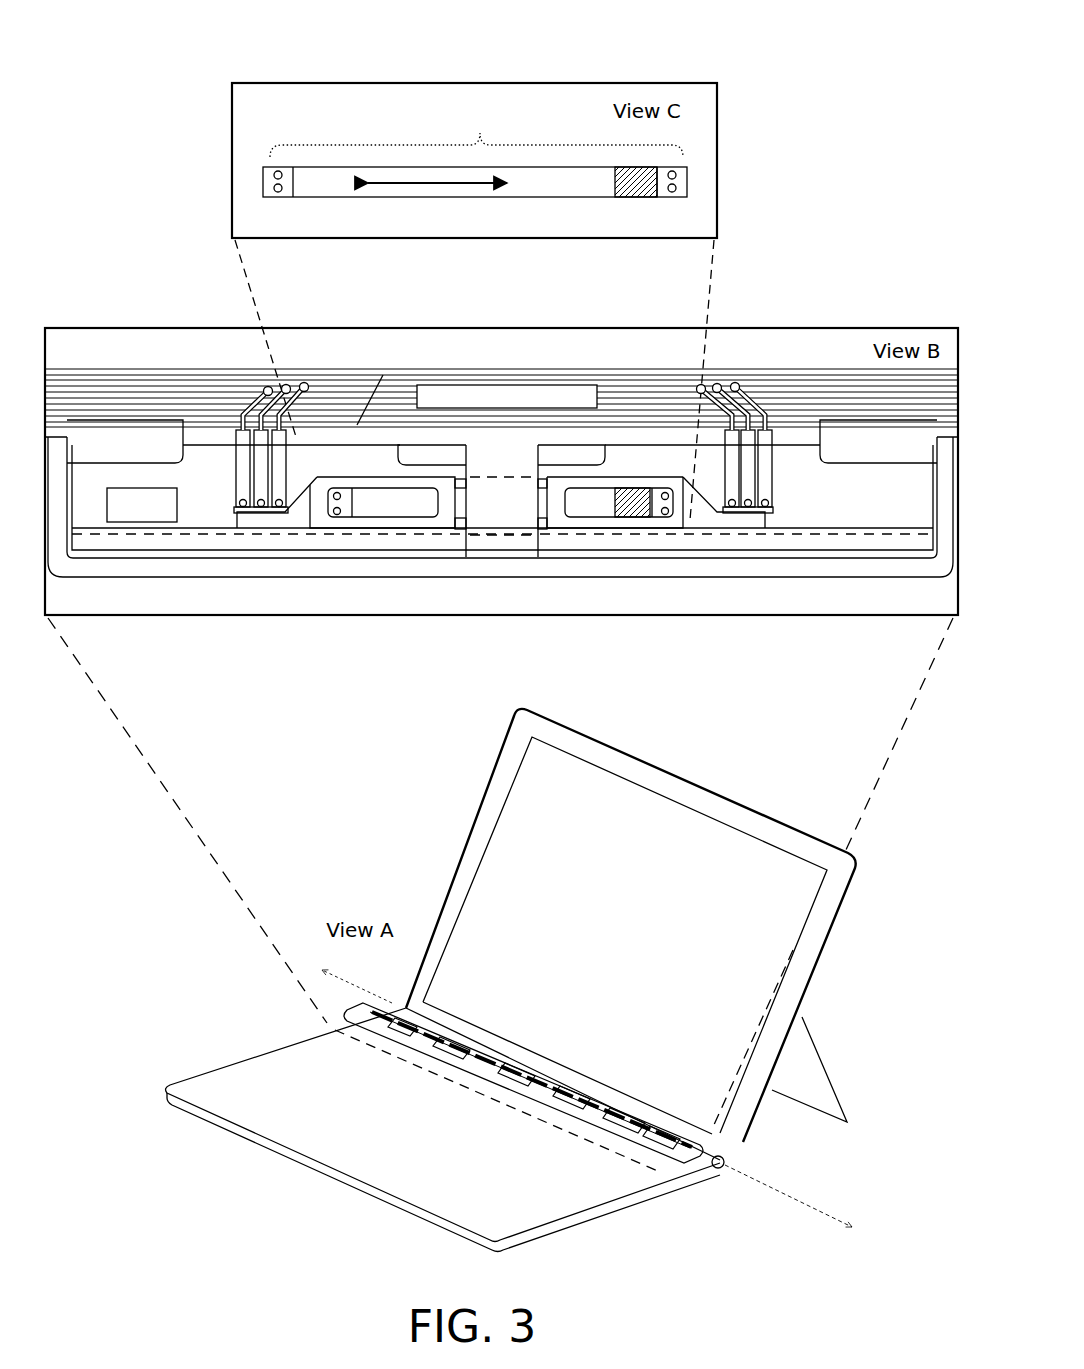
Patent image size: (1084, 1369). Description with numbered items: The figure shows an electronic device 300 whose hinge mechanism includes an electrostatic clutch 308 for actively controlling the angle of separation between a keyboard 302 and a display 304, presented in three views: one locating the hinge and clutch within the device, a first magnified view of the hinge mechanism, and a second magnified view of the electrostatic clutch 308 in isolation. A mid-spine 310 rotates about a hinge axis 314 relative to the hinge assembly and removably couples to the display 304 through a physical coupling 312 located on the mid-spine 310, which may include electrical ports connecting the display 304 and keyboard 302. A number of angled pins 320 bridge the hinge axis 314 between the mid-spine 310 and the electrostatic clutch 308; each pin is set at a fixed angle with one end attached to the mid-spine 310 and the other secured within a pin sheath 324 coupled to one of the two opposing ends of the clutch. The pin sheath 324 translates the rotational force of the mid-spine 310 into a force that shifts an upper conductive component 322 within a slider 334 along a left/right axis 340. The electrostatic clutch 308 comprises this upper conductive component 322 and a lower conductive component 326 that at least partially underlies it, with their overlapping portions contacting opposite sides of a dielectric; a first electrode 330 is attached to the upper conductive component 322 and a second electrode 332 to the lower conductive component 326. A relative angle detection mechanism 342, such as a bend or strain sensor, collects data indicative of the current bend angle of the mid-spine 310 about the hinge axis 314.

The electronic device 300 is at (176, 50).
The keyboard 302 is at (355, 1157).
The display 304 is at (817, 942).
The electrostatic clutch 308 is at (775, 1244).
The mid-spine 310 is at (358, 397).
The physical coupling 312 is at (507, 397).
The hinge axis 314 is at (777, 1190).
The angled pins 320 is at (738, 385).
The upper conductive component 322 is at (397, 503).
The pin sheath 324 is at (284, 473).
The lower conductive component 326 is at (640, 500).
The first electrode 330 is at (270, 193).
The second electrode 332 is at (675, 193).
The slider 334 is at (443, 520).
The left/right axis 340 is at (450, 186).
The relative angle detection mechanism 342 is at (142, 505).